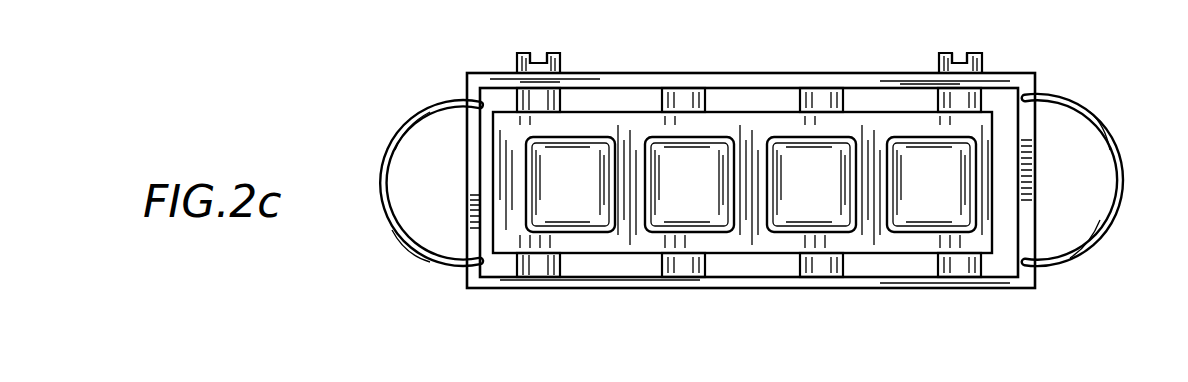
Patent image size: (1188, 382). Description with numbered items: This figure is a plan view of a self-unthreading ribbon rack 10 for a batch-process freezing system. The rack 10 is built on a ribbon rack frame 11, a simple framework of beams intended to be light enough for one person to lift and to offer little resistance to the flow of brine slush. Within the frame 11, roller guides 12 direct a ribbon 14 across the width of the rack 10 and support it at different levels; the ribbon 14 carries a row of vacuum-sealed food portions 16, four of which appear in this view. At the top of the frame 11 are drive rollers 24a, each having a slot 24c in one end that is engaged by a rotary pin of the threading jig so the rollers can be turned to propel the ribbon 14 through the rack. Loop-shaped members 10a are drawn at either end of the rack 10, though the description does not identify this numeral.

The self-unthreading ribbon rack 10 is at (462, 276).
The handle 10a is at (402, 134).
The ribbon rack frame 11 is at (468, 83).
The roller guide 12 is at (795, 100).
The ribbon 14 is at (587, 136).
The vacuum-sealed food portion 16 is at (583, 196).
The drive roller 24a is at (516, 61).
The slot 24c is at (541, 53).